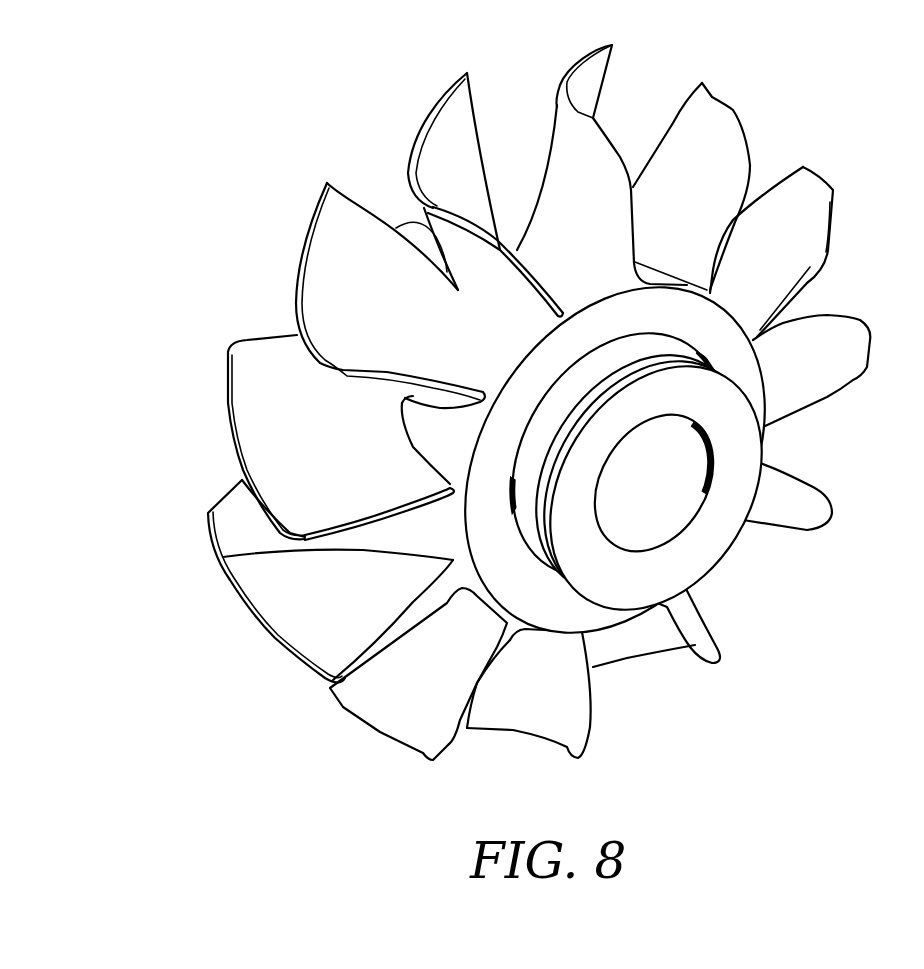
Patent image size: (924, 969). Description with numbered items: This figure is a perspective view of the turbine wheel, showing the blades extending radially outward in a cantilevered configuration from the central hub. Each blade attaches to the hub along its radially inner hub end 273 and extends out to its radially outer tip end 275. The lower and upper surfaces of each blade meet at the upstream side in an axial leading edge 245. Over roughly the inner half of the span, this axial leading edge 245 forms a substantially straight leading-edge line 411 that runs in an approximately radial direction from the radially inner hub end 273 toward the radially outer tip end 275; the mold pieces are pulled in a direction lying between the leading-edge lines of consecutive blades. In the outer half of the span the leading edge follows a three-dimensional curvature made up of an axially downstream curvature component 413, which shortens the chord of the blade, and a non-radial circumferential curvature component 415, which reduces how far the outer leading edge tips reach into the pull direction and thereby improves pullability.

The axial leading edge 245 is at (510, 253).
The radially inner hub end 273 is at (773, 337).
The radially outer tip end 275 is at (838, 187).
The leading-edge line 411 is at (803, 283).
The axially downstream curvature component 413 is at (833, 236).
The circumferential curvature component 415 is at (343, 688).